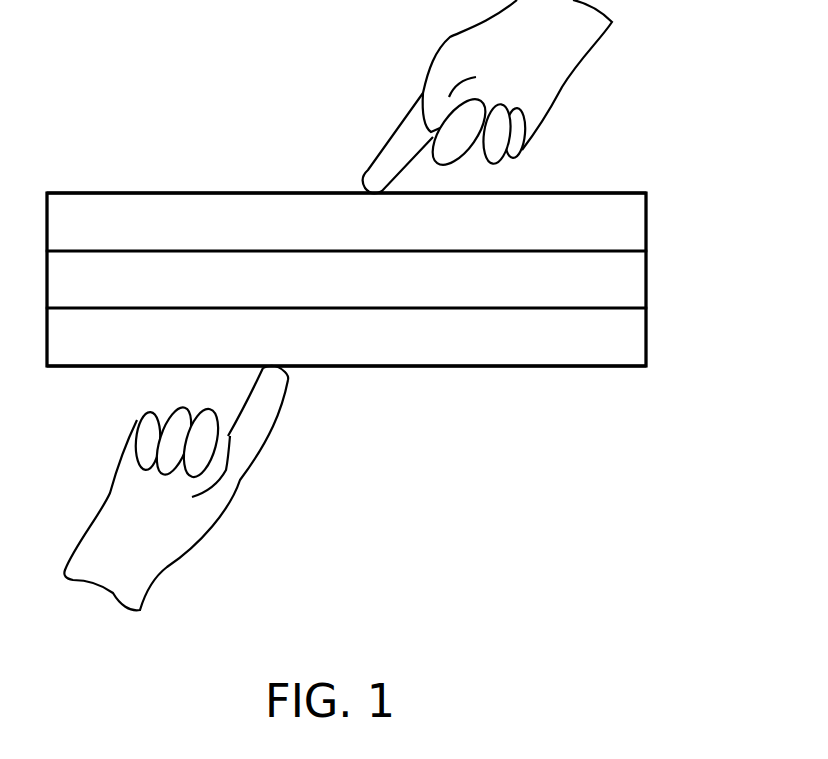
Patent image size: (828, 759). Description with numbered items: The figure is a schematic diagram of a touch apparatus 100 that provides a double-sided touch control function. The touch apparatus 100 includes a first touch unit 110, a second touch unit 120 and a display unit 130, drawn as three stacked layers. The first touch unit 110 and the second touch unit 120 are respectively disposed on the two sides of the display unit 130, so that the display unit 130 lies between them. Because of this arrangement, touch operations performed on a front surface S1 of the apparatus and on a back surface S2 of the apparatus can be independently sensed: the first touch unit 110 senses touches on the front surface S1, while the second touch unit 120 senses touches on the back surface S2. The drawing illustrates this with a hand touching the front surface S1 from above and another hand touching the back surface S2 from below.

The touch apparatus 100 is at (379, 330).
The first touch unit 110 is at (658, 194).
The second touch unit 120 is at (658, 309).
The display unit 130 is at (658, 252).
The front surface S1 is at (175, 192).
The back surface S2 is at (575, 367).